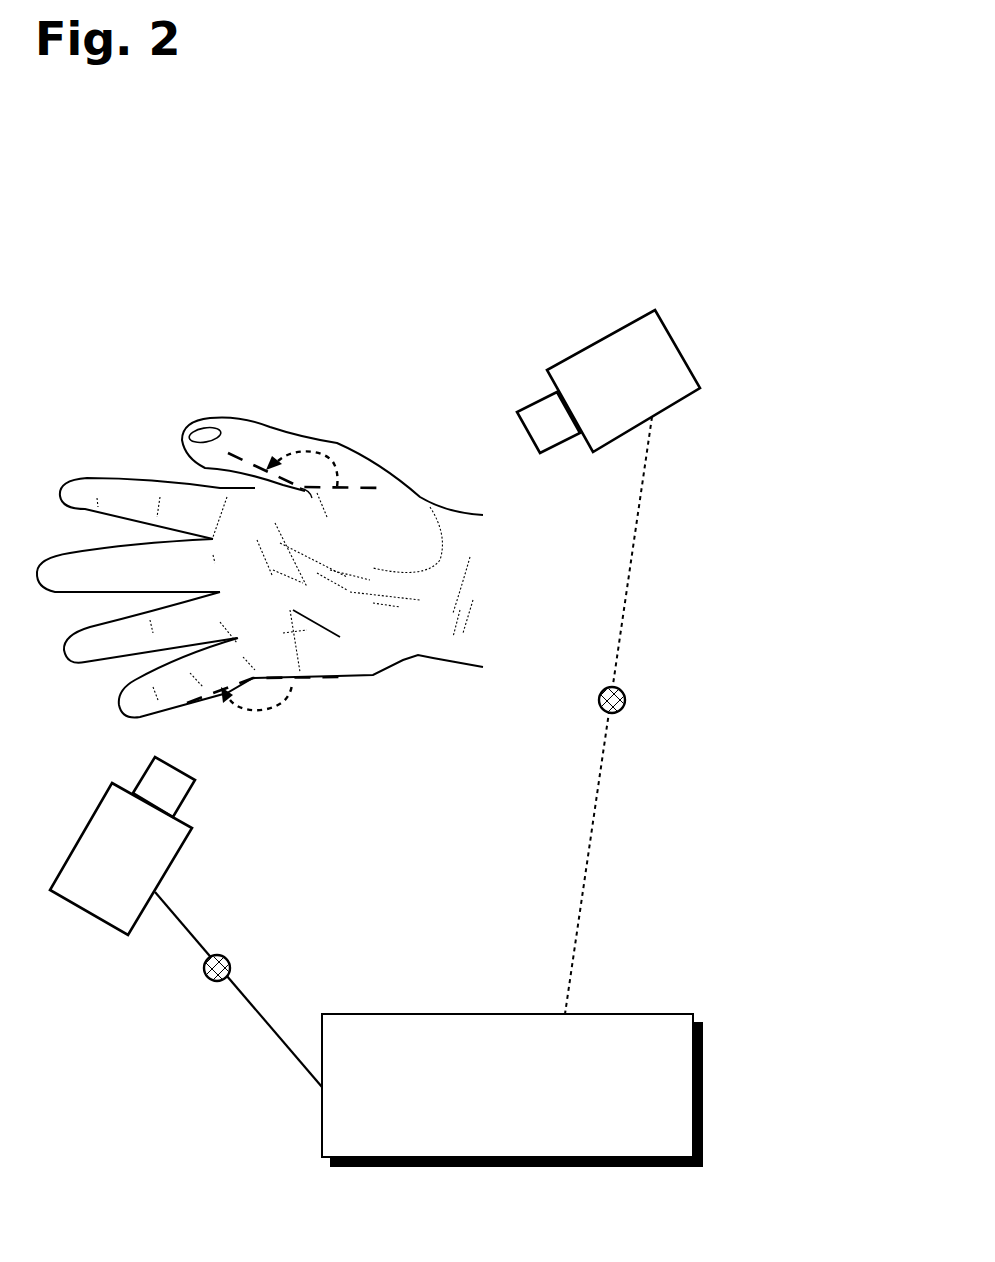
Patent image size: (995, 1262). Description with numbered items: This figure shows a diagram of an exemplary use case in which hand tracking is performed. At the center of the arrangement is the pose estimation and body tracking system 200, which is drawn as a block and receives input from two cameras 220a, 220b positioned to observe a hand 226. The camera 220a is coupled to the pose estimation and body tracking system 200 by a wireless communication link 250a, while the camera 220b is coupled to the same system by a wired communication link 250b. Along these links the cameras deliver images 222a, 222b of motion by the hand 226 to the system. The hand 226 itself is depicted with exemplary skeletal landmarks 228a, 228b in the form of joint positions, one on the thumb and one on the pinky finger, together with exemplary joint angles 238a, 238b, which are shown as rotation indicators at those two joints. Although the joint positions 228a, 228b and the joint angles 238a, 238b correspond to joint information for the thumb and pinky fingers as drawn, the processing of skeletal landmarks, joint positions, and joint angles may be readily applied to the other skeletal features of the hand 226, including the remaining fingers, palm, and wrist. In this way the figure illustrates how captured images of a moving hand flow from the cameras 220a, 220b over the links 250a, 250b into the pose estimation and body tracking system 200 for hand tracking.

The pose estimation and body tracking system 200 is at (703, 1072).
The camera 220a is at (592, 348).
The camera 220b is at (80, 917).
The image of motion by hand 222a is at (625, 692).
The image of motion by hand 222b is at (233, 963).
The hand 226 is at (412, 636).
The skeletal landmark 228a is at (352, 468).
The skeletal landmark 228b is at (254, 657).
The joint angle 238a is at (298, 455).
The joint angle 238b is at (278, 706).
The wireless communication link 250a is at (592, 843).
The wired communication link 250b is at (278, 1038).